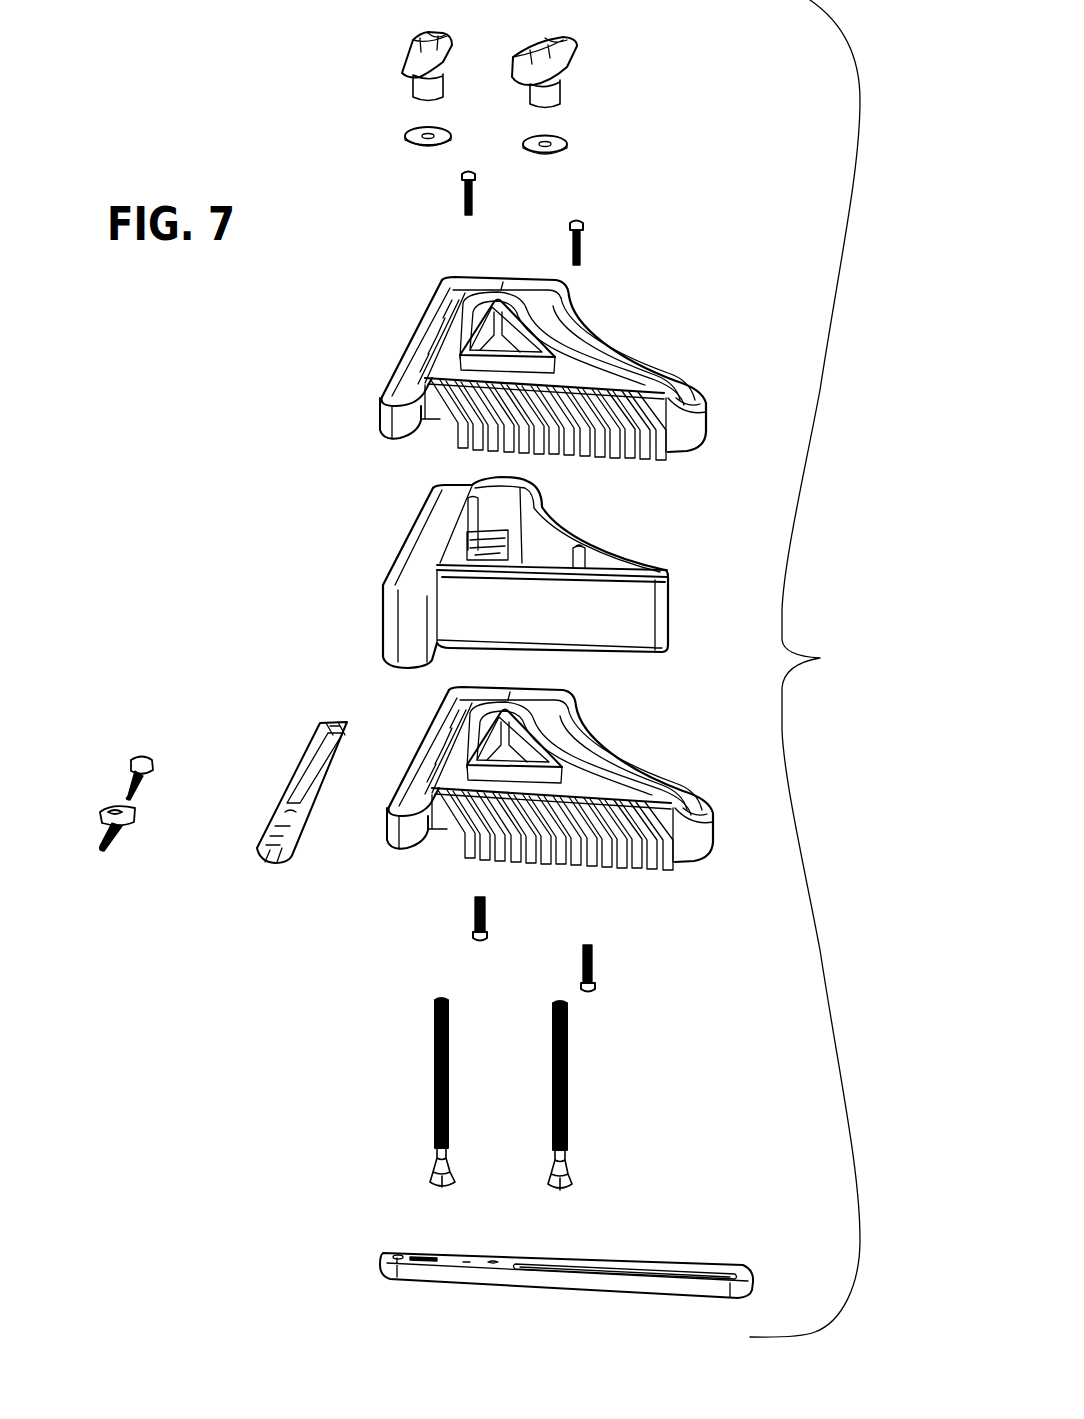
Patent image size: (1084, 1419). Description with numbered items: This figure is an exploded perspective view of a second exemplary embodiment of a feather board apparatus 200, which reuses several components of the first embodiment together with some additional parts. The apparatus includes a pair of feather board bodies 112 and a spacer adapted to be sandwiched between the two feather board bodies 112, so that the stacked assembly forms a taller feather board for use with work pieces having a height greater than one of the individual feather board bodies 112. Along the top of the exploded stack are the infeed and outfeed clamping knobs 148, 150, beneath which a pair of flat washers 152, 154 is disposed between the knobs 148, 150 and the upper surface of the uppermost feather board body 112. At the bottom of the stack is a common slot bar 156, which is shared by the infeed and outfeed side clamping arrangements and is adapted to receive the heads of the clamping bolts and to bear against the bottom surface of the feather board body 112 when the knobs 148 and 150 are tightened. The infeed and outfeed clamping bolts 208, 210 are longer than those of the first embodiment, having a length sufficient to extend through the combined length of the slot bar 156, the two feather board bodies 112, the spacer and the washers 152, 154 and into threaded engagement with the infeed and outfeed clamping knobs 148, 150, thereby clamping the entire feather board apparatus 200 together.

The feather board body 112 is at (410, 337).
The infeed clamping knob 148 is at (412, 62).
The outfeed clamping knob 150 is at (575, 50).
The flat washer 152 is at (403, 134).
The flat washer 154 is at (568, 144).
The slot bar 156 is at (383, 1268).
The feather board apparatus 200 is at (820, 658).
The infeed clamping bolt 208 is at (433, 1055).
The outfeed clamping bolt 210 is at (550, 1067).